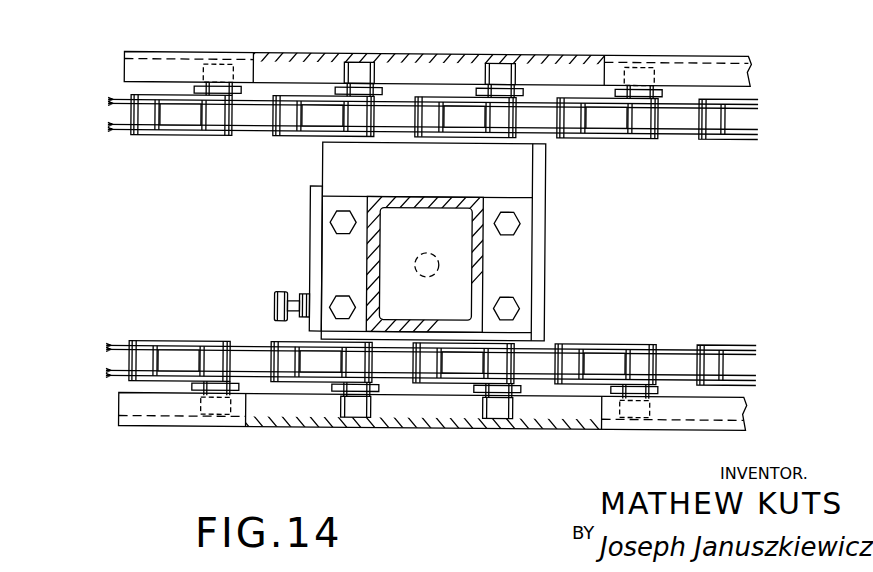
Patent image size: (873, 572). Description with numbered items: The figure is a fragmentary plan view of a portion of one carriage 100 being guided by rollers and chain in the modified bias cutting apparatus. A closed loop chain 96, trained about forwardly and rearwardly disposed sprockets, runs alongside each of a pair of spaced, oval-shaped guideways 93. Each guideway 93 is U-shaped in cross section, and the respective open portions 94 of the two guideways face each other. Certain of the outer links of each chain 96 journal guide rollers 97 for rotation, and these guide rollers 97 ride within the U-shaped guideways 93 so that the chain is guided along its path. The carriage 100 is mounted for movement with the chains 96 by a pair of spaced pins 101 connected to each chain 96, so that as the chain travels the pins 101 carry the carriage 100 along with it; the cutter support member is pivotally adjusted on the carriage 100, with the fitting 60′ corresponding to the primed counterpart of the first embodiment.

The guideway 93 is at (747, 77).
The open portion 94 is at (437, 422).
The chain 96 is at (168, 137).
The guide roller 97 is at (603, 80).
The carriage 100 is at (469, 243).
The pin 101 is at (357, 144).
The adjusting screw fitting 60′ is at (276, 305).